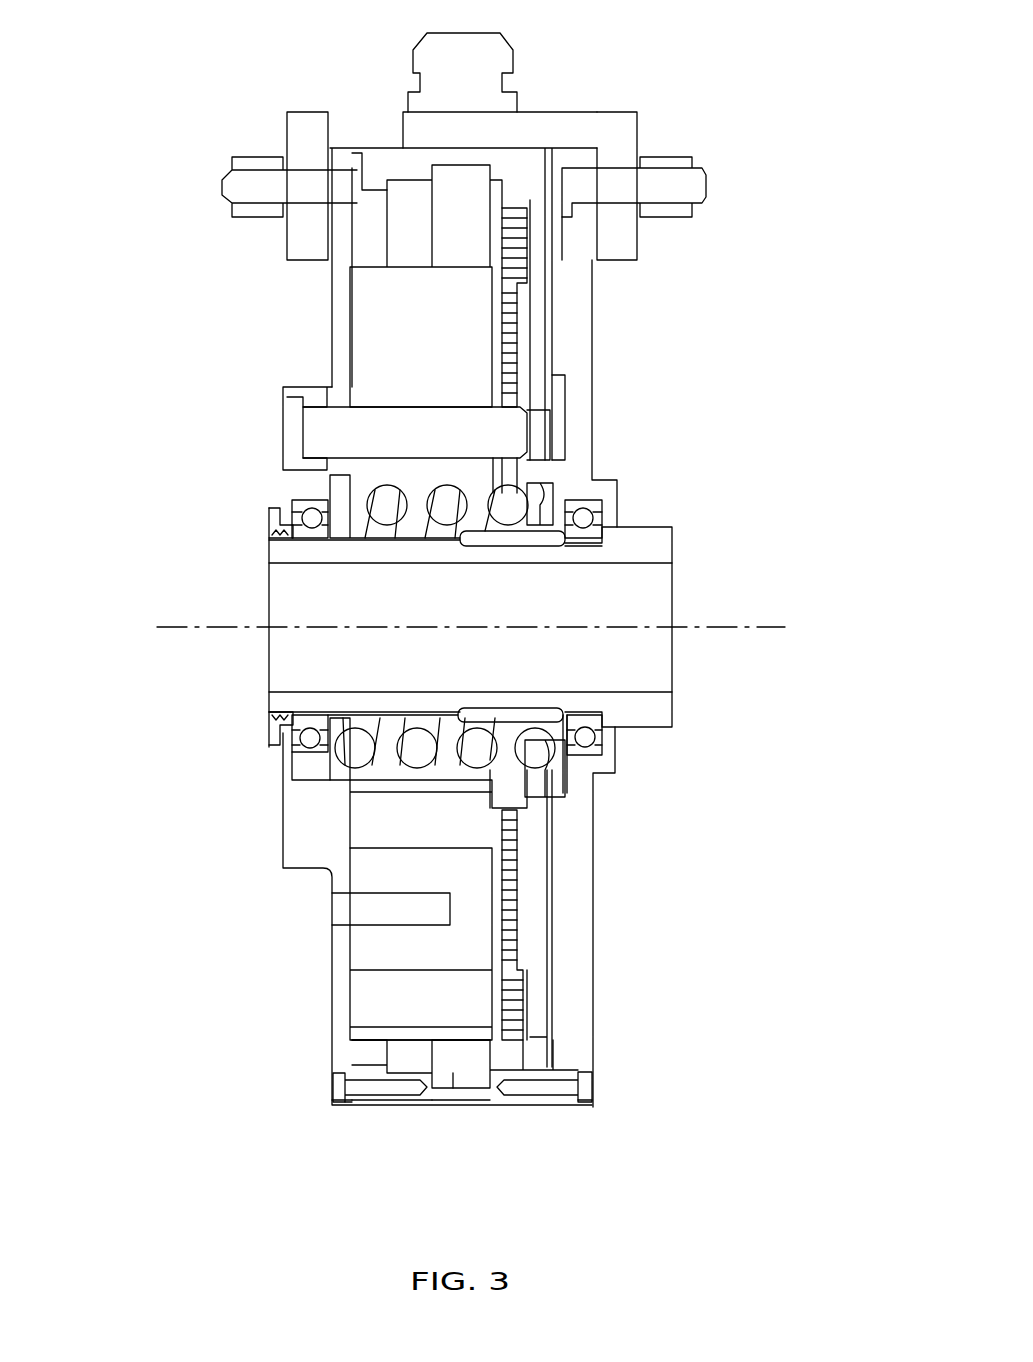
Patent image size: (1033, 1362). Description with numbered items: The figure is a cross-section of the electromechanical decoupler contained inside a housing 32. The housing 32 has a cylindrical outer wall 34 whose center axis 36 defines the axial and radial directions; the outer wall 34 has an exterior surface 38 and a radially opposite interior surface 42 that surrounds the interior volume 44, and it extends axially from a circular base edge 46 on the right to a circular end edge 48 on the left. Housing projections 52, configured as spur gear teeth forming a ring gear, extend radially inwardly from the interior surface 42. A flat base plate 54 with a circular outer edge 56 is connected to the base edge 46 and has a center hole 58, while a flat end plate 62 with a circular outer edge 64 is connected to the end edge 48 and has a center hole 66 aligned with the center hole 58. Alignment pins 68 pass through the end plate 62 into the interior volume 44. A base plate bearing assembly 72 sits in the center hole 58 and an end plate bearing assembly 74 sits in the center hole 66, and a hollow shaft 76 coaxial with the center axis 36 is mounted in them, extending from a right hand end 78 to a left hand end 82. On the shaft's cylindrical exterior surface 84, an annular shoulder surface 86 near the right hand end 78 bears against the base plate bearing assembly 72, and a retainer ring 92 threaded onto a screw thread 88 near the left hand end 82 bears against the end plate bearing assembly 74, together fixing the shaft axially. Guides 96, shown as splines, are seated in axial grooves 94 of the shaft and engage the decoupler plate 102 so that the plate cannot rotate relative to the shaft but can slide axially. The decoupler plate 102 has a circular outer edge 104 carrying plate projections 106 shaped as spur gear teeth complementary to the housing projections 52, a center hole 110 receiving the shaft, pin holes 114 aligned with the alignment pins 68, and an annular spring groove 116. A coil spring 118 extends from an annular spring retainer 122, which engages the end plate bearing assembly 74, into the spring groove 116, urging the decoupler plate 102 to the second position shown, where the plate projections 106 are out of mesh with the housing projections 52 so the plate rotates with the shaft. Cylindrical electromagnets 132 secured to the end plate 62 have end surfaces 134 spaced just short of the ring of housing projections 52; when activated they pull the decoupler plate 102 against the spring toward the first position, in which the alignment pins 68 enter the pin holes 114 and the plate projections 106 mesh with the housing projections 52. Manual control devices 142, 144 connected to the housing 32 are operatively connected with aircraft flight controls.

The housing 32 is at (323, 992).
The outer wall 34 is at (390, 1108).
The center axis 36 is at (177, 630).
The exterior surface 38 is at (462, 1108).
The interior surface 42 is at (453, 1073).
The interior volume 44 is at (468, 1063).
The base edge 46 is at (593, 1085).
The end edge 48 is at (333, 1085).
The housing projections 52 is at (513, 195).
The base plate 54 is at (593, 942).
The outer edge 56 is at (583, 1108).
The center hole 58 is at (587, 740).
The end plate 62 is at (332, 945).
The outer edge 64 is at (340, 1108).
The center hole 66 is at (313, 750).
The alignment pins 68 is at (325, 405).
The base plate bearing assembly 72 is at (598, 508).
The end plate bearing assembly 74 is at (287, 508).
The shaft 76 is at (267, 607).
The right hand end 78 is at (673, 705).
The left hand end 82 is at (267, 700).
The exterior surface 84 is at (370, 770).
The shoulder surface 86 is at (592, 537).
The screw thread 88 is at (273, 733).
The retainer ring 92 is at (267, 520).
The axial grooves 94 is at (528, 715).
The guides 96 is at (547, 708).
The decoupler plate 102 is at (538, 362).
The outer edge 104 is at (542, 197).
The plate projections 106 is at (538, 212).
The center hole 110 is at (523, 533).
The pin holes 114 is at (538, 430).
The spring groove 116 is at (540, 487).
The coil spring 118 is at (383, 490).
The spring retainer 122 is at (340, 772).
The electromagnets 132 is at (367, 312).
The end surfaces 134 is at (492, 313).
The manual control device 142 is at (623, 112).
The manual control device 144 is at (303, 110).